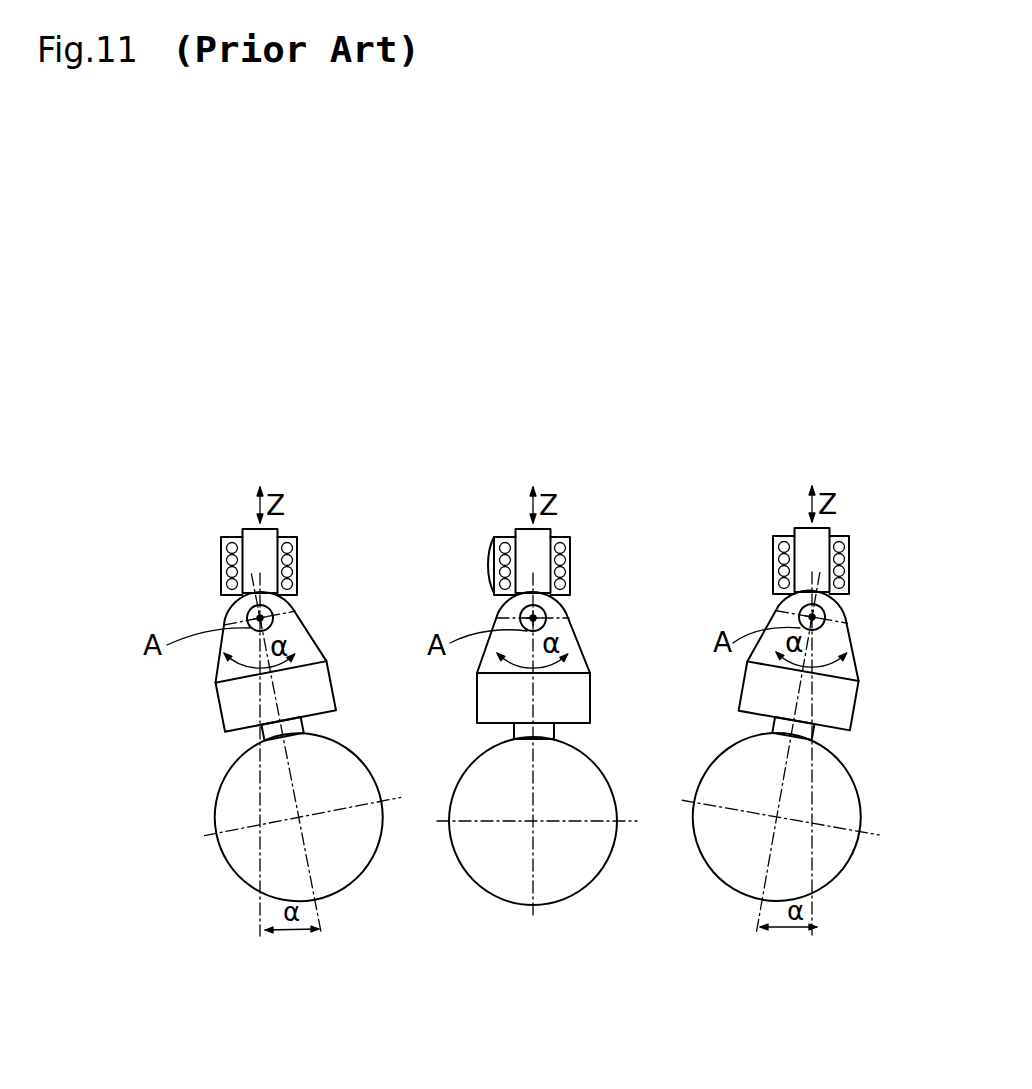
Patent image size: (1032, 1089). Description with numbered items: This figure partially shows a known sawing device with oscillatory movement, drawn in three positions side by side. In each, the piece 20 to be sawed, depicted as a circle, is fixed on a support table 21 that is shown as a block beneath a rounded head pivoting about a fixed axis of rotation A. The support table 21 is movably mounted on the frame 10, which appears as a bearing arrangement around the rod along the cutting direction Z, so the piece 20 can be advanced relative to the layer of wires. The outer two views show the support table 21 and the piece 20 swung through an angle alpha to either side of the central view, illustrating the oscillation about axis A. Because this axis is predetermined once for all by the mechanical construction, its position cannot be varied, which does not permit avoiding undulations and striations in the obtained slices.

The frame 10 is at (491, 568).
The piece to be sawed 20 is at (353, 787).
The support table 21 is at (312, 708).